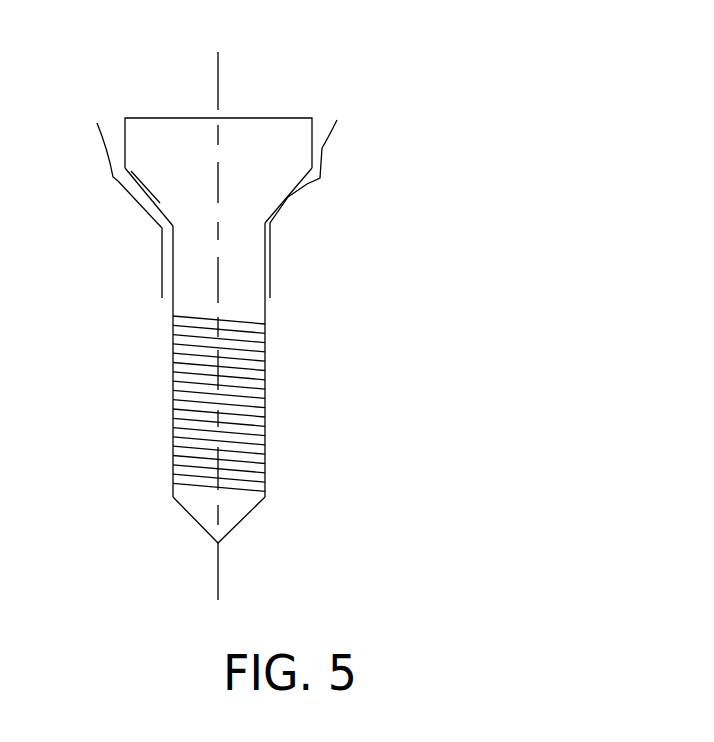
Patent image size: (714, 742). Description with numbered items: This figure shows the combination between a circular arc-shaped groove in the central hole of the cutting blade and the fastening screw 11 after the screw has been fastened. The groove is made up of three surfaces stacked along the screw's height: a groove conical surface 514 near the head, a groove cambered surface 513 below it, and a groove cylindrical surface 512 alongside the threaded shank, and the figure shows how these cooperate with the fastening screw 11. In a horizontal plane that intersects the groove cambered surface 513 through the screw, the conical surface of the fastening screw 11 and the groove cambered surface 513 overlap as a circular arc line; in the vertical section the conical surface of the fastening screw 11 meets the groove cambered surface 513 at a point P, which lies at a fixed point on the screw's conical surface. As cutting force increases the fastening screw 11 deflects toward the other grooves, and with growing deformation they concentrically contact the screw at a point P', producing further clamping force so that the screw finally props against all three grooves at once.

The fastening screw 11 is at (247, 137).
The groove cylindrical surface 512 is at (268, 272).
The groove cambered surface 513 is at (310, 183).
The groove conical surface 514 is at (322, 148).
The point P is at (334, 233).
The point P' is at (95, 245).